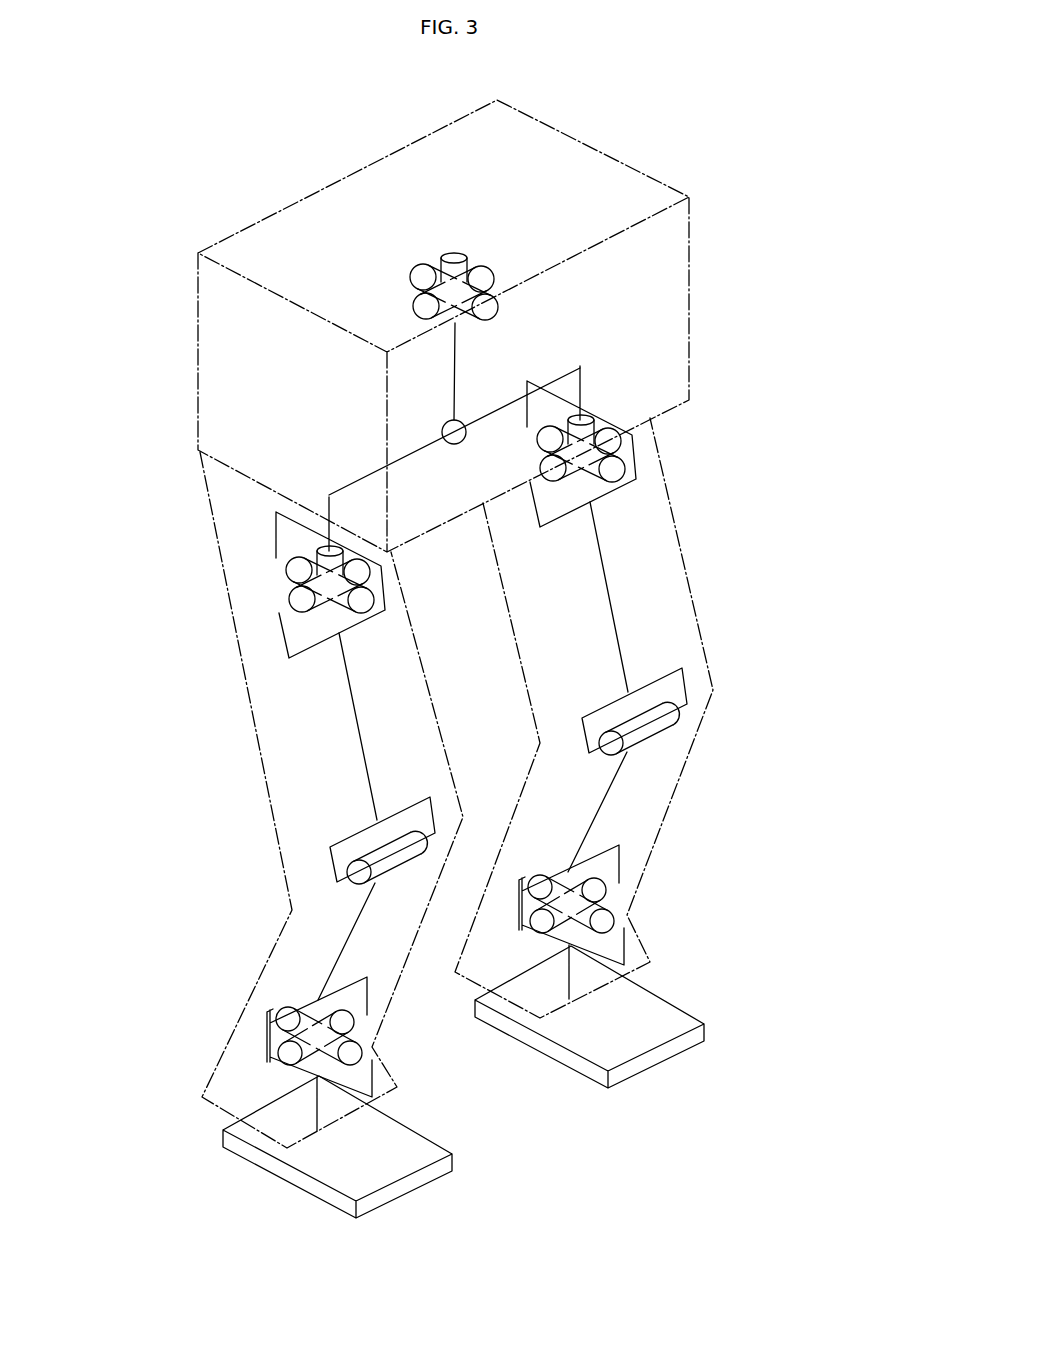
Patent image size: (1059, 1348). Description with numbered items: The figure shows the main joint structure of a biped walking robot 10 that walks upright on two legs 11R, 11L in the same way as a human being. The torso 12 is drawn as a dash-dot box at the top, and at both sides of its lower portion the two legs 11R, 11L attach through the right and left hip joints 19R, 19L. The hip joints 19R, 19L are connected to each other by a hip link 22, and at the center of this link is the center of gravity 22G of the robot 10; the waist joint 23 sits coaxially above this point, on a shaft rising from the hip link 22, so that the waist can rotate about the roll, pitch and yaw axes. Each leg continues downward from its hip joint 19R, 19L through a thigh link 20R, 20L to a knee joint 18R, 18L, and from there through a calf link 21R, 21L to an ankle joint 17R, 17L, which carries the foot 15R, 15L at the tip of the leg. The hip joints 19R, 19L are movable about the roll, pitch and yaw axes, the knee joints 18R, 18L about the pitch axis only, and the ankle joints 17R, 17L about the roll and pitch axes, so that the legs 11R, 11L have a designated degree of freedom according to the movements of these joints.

The robot 10 is at (768, 137).
The torso 12 is at (690, 283).
The waist joint 23 is at (437, 270).
The hip link 22 is at (506, 404).
The center of gravity 22G is at (447, 423).
The left hip joint 19L is at (610, 444).
The right hip joint 19R is at (300, 571).
The left thigh link 20L is at (608, 585).
The right thigh link 20R is at (348, 682).
The left leg 11L is at (705, 655).
The right leg 11R is at (262, 765).
The left knee joint 18L is at (656, 722).
The right knee joint 18R is at (367, 861).
The left calf link 21L is at (611, 796).
The right calf link 21R is at (347, 935).
The left ankle joint 17L is at (605, 899).
The right ankle joint 17R is at (287, 1030).
The left foot 15L is at (672, 1047).
The right foot 15R is at (420, 1175).